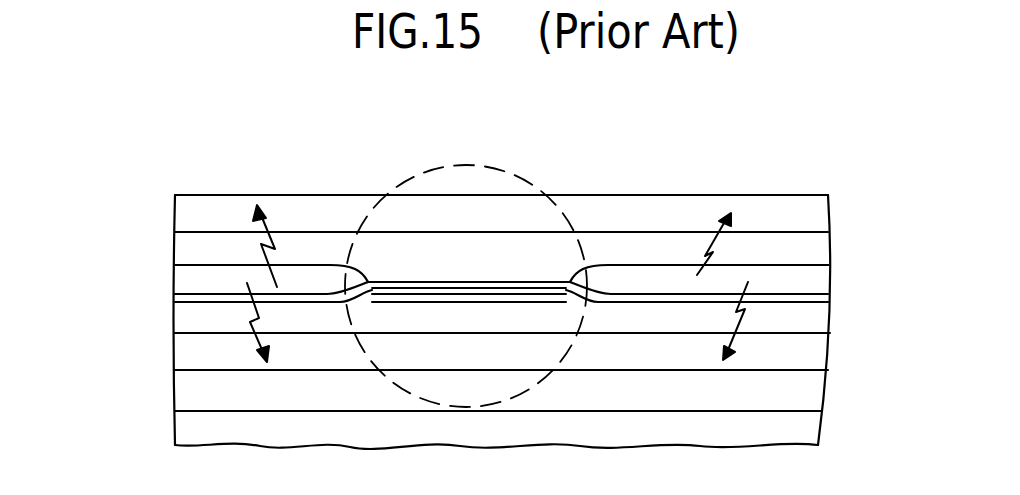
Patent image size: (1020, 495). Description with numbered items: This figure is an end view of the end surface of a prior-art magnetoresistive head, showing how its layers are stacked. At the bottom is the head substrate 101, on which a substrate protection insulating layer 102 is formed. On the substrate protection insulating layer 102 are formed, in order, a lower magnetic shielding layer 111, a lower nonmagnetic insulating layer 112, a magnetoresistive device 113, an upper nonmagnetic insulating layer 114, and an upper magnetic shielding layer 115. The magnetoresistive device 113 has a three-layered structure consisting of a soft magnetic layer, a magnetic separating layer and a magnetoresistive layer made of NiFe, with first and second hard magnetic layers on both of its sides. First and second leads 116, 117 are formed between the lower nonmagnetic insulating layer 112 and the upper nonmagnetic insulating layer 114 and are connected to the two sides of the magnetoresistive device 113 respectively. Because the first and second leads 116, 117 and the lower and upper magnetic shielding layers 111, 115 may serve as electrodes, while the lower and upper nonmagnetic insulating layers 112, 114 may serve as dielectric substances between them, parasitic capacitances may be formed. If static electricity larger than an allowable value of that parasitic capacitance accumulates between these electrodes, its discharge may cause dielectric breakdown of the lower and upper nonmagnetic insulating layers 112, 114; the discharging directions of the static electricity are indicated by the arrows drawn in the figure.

The head substrate 101 is at (175, 432).
The substrate protection insulating layer 102 is at (792, 390).
The lower magnetic shielding layer 111 is at (175, 357).
The lower nonmagnetic insulating layer 112 is at (175, 320).
The magnetoresistive device 113 is at (460, 312).
The upper nonmagnetic insulating layer 114 is at (173, 256).
The upper magnetic shielding layer 115 is at (172, 214).
The first lead 116 is at (808, 282).
The second lead 117 is at (177, 278).